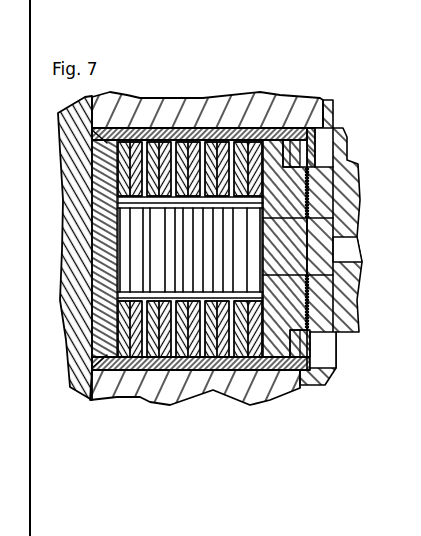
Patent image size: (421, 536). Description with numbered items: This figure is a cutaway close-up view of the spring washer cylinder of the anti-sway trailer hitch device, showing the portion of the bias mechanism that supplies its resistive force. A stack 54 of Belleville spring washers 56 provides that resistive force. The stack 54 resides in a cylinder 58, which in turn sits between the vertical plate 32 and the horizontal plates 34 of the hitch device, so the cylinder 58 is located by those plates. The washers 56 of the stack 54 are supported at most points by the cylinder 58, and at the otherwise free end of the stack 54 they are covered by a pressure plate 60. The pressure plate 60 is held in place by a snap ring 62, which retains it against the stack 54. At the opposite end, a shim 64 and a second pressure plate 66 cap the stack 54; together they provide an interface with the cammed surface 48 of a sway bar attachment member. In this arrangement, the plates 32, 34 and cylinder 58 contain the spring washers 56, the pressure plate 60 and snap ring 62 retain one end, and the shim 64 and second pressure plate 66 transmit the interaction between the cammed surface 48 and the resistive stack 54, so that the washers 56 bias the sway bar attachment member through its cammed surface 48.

The vertical plate 32 is at (80, 382).
The horizontal plates 34 is at (168, 102).
The cammed surface 48 is at (335, 278).
The stack 54 is at (198, 425).
The Belleville spring washers 56 is at (263, 342).
The cylinder 58 is at (181, 160).
The pressure plate 60 is at (280, 160).
The snap ring 62 is at (293, 147).
The shim 64 is at (315, 310).
The second pressure plate 66 is at (328, 178).